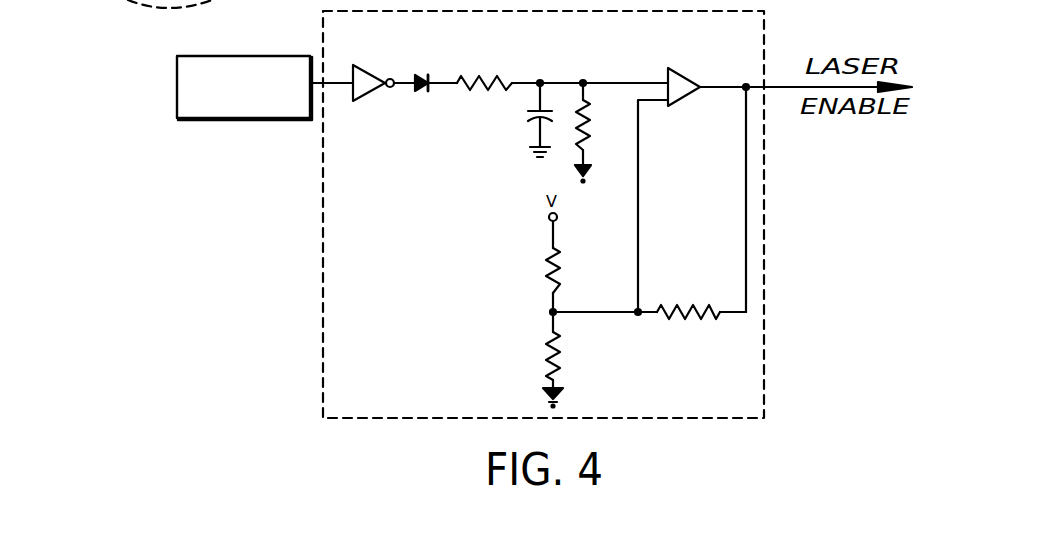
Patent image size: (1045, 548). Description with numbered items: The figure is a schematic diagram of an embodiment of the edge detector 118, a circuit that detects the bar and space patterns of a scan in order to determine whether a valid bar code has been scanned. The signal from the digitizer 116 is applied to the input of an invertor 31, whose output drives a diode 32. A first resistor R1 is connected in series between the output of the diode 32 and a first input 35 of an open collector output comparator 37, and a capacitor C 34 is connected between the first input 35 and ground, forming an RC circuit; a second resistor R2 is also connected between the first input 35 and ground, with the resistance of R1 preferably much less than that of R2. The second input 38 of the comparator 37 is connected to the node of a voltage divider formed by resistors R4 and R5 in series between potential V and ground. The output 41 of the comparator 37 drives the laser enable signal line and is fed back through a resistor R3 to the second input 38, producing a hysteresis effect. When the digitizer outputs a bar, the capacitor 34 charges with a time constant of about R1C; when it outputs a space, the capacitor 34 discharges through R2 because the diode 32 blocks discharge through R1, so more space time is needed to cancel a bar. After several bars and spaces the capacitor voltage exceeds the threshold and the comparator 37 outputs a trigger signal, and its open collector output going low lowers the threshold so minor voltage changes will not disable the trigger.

The digitizer 116 is at (238, 56).
The edge detector 118 is at (323, 240).
The invertor 31 is at (377, 74).
The diode 32 is at (425, 73).
The capacitor 34 is at (536, 120).
The first input 35 is at (631, 81).
The open collector output comparator 37 is at (683, 73).
The second input 38 is at (647, 101).
The output 41 is at (727, 86).
The first resistor R1 is at (495, 77).
The second resistor R2 is at (600, 131).
The feedback resistor R3 is at (693, 319).
The voltage divider resistor R4 is at (553, 272).
The voltage divider resistor R5 is at (553, 361).
The capacitor C is at (563, 120).